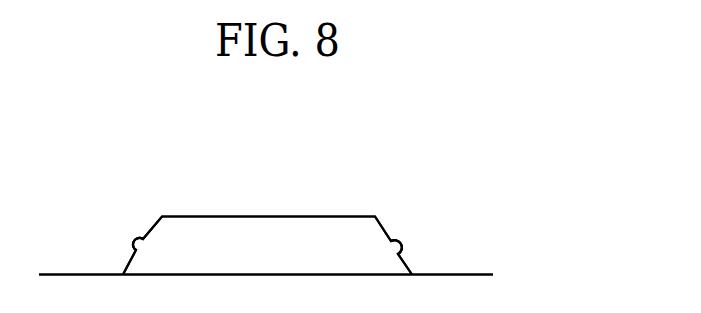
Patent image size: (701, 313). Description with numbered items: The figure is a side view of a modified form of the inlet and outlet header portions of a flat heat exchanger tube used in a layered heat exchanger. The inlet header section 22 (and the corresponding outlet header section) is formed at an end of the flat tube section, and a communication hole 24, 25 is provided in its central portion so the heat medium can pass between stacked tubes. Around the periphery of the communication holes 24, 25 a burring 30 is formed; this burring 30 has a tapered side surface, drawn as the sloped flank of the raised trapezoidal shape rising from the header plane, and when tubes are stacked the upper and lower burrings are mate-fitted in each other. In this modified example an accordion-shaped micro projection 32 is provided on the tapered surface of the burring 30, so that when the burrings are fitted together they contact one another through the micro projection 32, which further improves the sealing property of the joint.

The inlet header section 22 is at (465, 274).
The communication hole 24 is at (263, 240).
The communication hole 25 is at (267, 246).
The burring 30 is at (384, 225).
The micro projection 32 is at (136, 238).